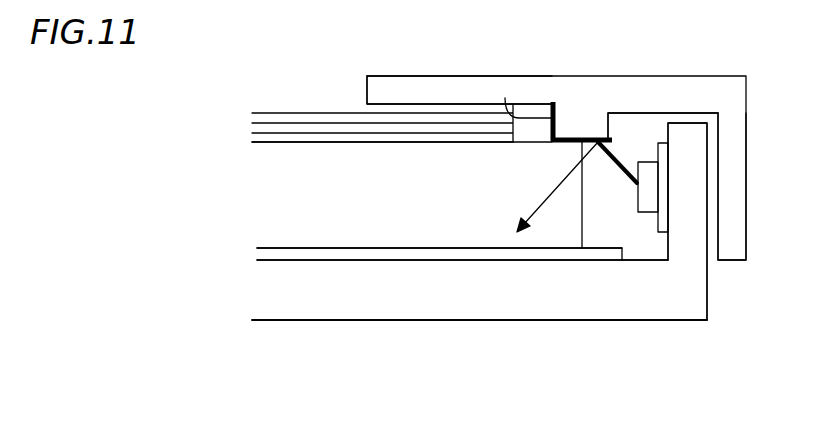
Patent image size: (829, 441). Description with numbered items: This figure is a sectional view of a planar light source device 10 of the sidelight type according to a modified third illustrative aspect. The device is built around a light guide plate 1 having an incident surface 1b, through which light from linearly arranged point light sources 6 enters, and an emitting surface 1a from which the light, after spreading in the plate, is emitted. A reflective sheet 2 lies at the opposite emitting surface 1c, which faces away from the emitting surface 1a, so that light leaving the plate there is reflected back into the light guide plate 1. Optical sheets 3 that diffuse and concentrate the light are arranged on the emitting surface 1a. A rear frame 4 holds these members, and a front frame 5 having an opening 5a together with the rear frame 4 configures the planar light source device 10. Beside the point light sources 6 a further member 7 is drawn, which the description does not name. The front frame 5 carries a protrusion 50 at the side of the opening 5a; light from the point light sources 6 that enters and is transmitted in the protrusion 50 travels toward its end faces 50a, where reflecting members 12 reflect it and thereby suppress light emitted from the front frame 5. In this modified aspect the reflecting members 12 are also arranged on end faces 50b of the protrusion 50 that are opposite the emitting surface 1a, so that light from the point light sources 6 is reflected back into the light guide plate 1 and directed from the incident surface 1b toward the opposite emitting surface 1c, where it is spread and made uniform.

The light guide plate 1 is at (405, 232).
The emitting surface 1a is at (347, 142).
The incident surface 1b is at (582, 193).
The opposite emitting surface 1c is at (427, 285).
The reflective sheet 2 is at (320, 257).
The optical sheets 3 is at (245, 100).
The rear frame 4 is at (682, 307).
The front frame 5 is at (732, 220).
The opening 5a is at (340, 87).
The point light sources 6 is at (648, 175).
The substrate 7 is at (658, 207).
The planar light source device 10 is at (677, 337).
The reflecting members 12 is at (553, 100).
The protrusion 50 is at (588, 97).
The end faces 50a is at (505, 98).
The end faces 50b is at (605, 113).